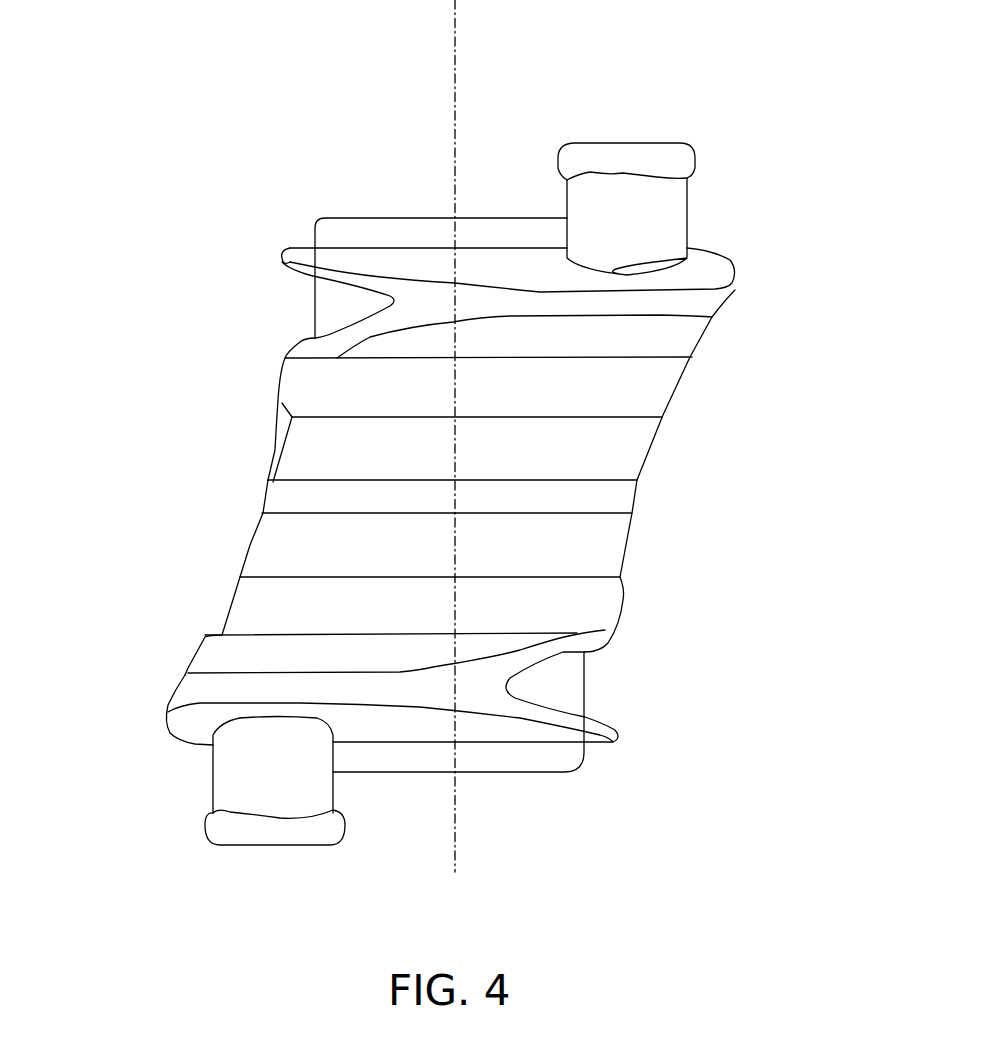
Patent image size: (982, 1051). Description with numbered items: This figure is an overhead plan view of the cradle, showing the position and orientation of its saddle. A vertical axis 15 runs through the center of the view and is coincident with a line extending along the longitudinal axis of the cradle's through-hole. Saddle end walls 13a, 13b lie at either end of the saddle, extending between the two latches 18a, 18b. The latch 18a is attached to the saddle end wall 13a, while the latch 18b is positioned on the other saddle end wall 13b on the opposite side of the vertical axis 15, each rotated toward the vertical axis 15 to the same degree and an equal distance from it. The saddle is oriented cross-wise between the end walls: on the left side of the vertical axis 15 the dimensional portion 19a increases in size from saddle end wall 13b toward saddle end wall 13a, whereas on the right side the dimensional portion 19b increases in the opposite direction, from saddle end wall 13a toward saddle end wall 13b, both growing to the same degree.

The vertical axis 15 is at (455, 62).
The latch 18b is at (678, 206).
The saddle end wall 13b is at (720, 292).
The dimensional portion 19b is at (665, 402).
The dimensional portion 19a is at (243, 558).
The saddle end wall 13a is at (185, 688).
The latch 18a is at (227, 780).